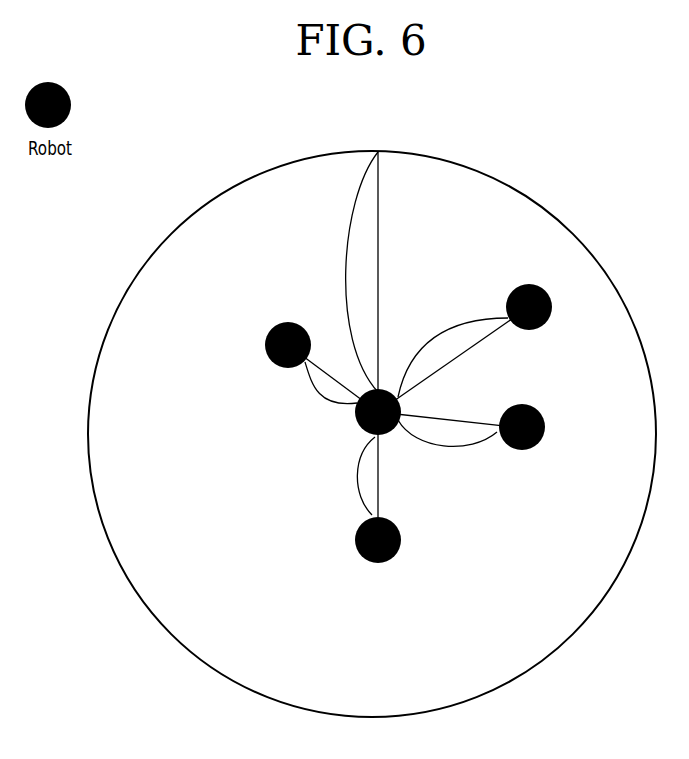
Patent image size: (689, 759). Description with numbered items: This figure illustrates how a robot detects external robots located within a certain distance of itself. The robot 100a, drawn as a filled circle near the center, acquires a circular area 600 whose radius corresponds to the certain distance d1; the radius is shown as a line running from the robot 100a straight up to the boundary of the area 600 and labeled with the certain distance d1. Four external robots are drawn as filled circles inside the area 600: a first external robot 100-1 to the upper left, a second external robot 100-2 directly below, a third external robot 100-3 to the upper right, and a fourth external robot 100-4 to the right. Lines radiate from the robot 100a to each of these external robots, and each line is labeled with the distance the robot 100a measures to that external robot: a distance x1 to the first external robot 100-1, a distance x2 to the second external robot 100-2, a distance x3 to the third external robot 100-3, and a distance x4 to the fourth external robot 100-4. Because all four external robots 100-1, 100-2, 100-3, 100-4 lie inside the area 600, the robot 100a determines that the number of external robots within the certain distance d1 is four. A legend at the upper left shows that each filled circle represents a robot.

The circular area 600 is at (186, 219).
The robot 100a is at (356, 424).
The first external robot 100-1 is at (277, 322).
The second external robot 100-2 is at (390, 561).
The third external robot 100-3 is at (518, 285).
The fourth external robot 100-4 is at (527, 449).
The certain distance d1 is at (355, 272).
The distance from the first external robot x1 is at (331, 383).
The distance from the second external robot x2 is at (360, 476).
The distance from the third external robot x3 is at (453, 357).
The distance from the fourth external robot x4 is at (447, 439).